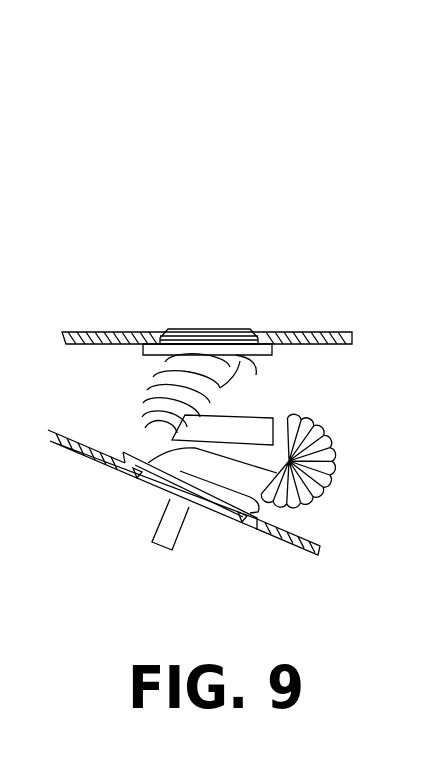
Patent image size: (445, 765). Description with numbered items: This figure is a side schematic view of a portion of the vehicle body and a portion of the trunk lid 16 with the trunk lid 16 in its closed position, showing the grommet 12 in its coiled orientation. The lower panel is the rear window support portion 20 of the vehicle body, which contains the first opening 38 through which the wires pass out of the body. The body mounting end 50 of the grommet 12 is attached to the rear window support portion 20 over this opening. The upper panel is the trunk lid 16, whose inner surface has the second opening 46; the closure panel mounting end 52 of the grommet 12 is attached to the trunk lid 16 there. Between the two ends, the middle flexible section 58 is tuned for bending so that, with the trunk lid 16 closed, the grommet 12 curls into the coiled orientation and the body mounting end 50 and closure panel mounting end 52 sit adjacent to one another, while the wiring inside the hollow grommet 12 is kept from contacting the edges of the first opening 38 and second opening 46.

The grommet 12 is at (325, 420).
The trunk lid 16 is at (130, 332).
The rear window support portion 20 is at (288, 544).
The first opening 38 is at (144, 480).
The second opening 46 is at (248, 341).
The body mounting end 50 is at (148, 462).
The closure panel mounting end 52 is at (238, 366).
The middle flexible section 58 is at (232, 426).